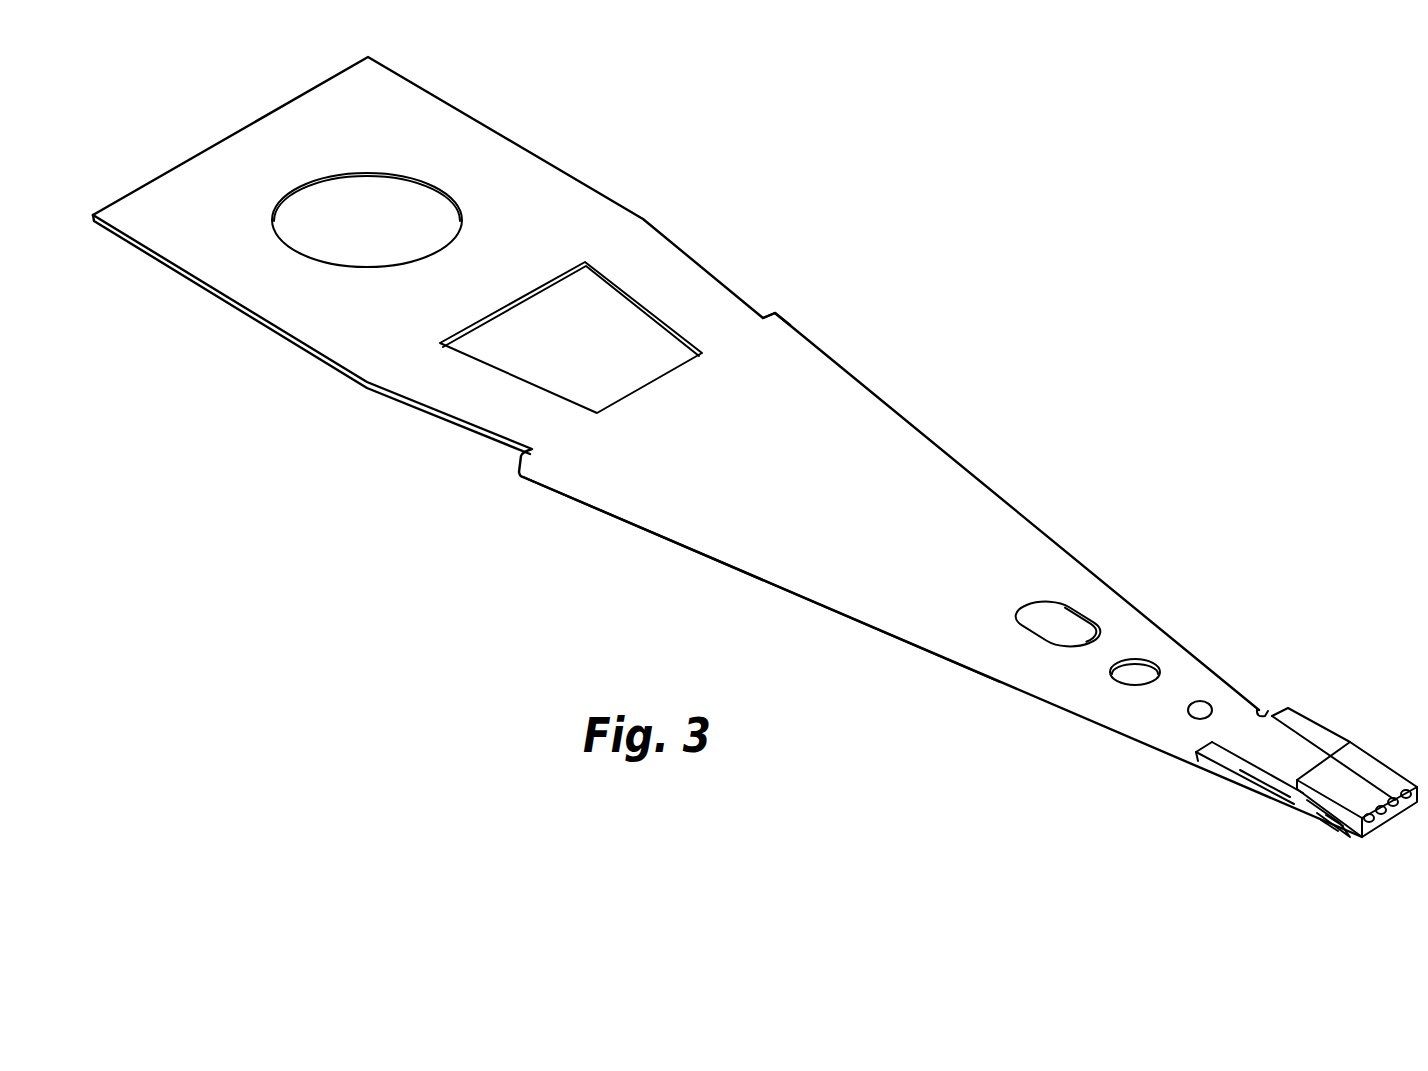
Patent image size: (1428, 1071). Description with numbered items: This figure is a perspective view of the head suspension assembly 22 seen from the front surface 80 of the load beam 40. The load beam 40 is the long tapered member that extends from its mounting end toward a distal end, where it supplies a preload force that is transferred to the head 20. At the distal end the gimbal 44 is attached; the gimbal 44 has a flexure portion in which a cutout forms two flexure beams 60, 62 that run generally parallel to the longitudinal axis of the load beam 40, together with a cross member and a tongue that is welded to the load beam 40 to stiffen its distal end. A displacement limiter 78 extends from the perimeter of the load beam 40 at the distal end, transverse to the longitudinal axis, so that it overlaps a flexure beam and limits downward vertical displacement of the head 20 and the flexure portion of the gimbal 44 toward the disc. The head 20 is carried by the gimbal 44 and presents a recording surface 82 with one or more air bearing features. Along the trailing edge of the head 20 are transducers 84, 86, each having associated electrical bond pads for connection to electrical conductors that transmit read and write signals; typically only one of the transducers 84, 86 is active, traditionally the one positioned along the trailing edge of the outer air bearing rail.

The head 20 is at (1305, 792).
The head suspension assembly 22 is at (961, 370).
The load beam 40 is at (814, 322).
The gimbal 44 is at (1276, 703).
The flexure beam 60 is at (1213, 781).
The flexure beam 62 is at (1299, 715).
The displacement limiter 78 is at (1308, 823).
The front surface 80 is at (727, 535).
The recording surface 82 is at (1357, 757).
The transducer 84 is at (1338, 830).
The transducer 86 is at (1413, 822).